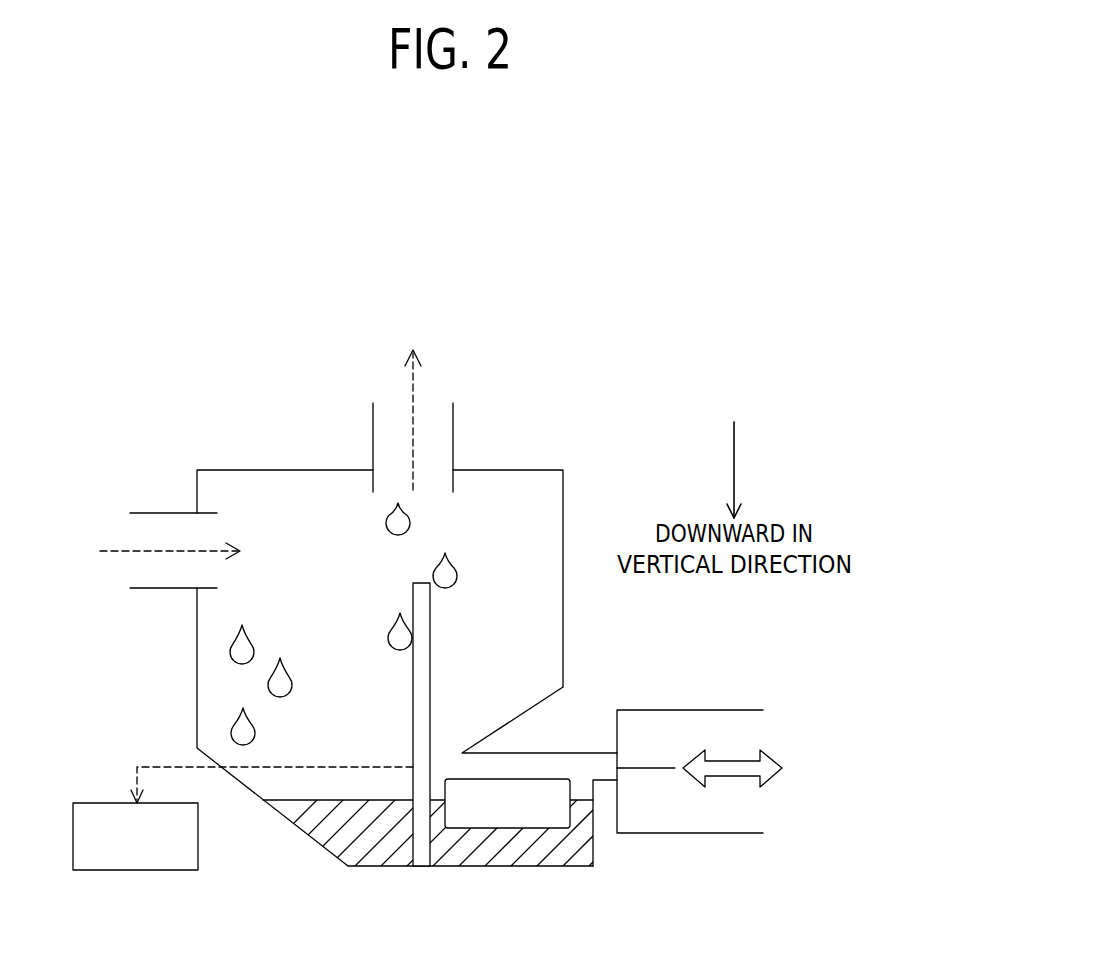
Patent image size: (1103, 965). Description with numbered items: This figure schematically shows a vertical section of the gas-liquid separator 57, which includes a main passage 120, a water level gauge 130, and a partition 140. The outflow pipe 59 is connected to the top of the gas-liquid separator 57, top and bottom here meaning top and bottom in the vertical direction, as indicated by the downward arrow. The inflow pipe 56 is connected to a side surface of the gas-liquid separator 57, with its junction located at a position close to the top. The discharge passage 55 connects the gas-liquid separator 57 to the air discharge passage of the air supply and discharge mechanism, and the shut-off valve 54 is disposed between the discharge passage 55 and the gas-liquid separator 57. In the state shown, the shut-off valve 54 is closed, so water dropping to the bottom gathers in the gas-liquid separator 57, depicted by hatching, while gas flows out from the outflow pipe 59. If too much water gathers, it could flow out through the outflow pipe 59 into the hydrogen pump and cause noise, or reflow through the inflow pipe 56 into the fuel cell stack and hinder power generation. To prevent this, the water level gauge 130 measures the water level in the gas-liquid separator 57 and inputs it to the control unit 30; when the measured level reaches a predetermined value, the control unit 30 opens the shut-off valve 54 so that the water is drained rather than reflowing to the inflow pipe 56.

The control unit 30 is at (121, 802).
The shut-off valve 54 is at (619, 791).
The discharge passage 55 is at (717, 708).
The inflow pipe 56 is at (142, 513).
The gas-liquid separator 57 is at (579, 483).
The outflow pipe 59 is at (455, 430).
The main passage 120 is at (548, 760).
The water level gauge 130 is at (422, 855).
The partition 140 is at (515, 813).